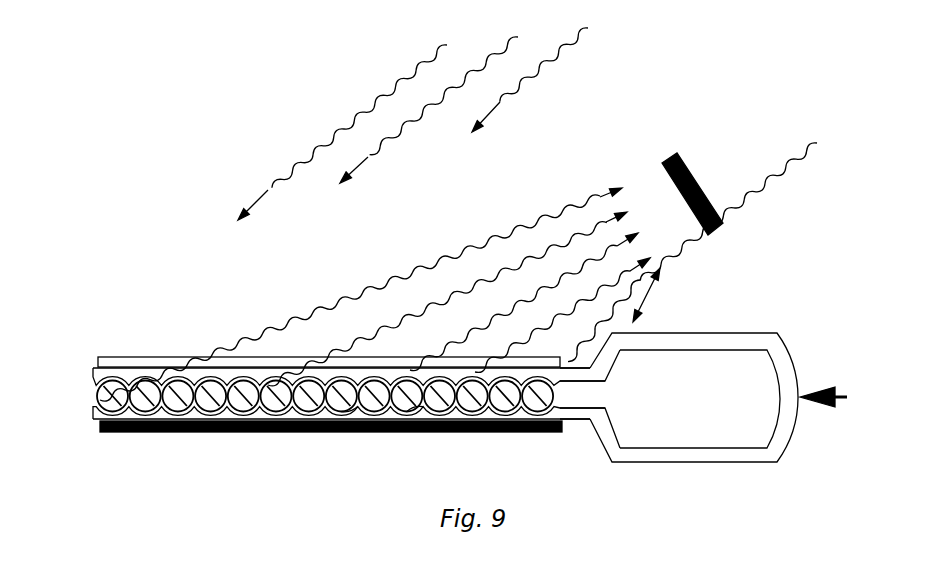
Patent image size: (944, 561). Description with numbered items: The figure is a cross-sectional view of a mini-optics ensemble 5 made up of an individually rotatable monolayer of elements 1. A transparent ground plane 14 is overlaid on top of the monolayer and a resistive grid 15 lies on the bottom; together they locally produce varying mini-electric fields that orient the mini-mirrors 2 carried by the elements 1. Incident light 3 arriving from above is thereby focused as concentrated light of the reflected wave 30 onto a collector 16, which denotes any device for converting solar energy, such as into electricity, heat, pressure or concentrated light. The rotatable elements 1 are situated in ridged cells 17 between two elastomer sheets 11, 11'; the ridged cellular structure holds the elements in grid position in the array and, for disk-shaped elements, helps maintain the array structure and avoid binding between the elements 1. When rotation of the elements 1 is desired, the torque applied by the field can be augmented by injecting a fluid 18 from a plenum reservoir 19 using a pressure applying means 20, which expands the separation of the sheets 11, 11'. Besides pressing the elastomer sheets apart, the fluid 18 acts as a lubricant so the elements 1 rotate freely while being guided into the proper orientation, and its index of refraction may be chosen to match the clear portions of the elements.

The rotatable elements 1 is at (56, 401).
The mini-mirrors 2 is at (100, 398).
The incident light 3 is at (355, 116).
The mini-optics ensemble 5 is at (145, 455).
The elastomer sheets 11 is at (602, 414).
The elastomer sheet 11' is at (605, 376).
The transparent ground plane 14 is at (446, 356).
The resistive grid 15 is at (490, 432).
The collector 16 is at (697, 180).
The ridged cells 17 is at (357, 412).
The fluid 18 is at (677, 425).
The plenum reservoir 19 is at (673, 363).
The pressure applying means 20 is at (841, 396).
The reflected wave 30 is at (423, 304).